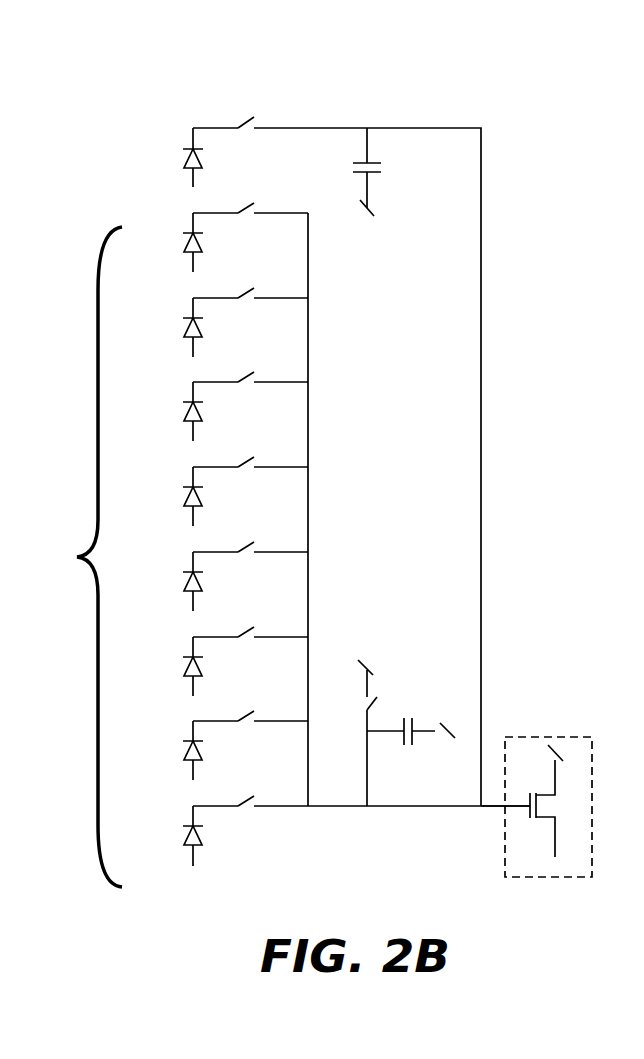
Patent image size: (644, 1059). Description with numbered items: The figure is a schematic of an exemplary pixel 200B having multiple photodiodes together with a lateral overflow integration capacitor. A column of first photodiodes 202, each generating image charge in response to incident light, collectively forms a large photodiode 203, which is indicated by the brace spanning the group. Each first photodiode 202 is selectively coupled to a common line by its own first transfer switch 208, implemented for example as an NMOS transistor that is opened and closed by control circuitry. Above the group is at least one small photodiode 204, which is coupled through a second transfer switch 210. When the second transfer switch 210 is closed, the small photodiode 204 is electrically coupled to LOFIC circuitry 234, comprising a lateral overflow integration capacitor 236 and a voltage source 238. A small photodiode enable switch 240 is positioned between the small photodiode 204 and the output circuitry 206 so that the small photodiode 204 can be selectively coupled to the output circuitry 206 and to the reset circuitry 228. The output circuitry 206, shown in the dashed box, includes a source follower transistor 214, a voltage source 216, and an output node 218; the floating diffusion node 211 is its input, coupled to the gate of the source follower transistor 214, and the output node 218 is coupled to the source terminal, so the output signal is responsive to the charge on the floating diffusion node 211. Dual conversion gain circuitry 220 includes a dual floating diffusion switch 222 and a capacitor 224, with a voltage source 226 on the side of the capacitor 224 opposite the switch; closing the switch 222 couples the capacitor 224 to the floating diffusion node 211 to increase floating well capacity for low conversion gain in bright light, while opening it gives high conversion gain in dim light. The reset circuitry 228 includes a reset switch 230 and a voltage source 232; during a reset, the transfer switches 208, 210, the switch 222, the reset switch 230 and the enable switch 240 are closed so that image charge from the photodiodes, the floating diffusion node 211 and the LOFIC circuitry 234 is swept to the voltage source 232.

The pixel 200B is at (520, 105).
The first photodiode 202 is at (193, 262).
The large photodiode 203 is at (81, 557).
The small photodiode 204 is at (193, 175).
The output circuitry 206 is at (537, 771).
The first transfer switch 208 is at (245, 205).
The second transfer switch 210 is at (245, 120).
The floating diffusion node 211 is at (518, 810).
The source follower transistor 214 is at (535, 790).
The voltage source 216 is at (556, 748).
The output node 218 is at (557, 843).
The dual conversion gain circuitry 220 is at (420, 716).
The dual floating diffusion switch 222 is at (370, 757).
The capacitor 224 is at (404, 715).
The voltage source 226 is at (438, 735).
The reset circuitry 228 is at (358, 678).
The reset switch 230 is at (368, 705).
The voltage source 232 is at (372, 675).
The LOFIC circuitry 234 is at (390, 178).
The lateral overflow integration capacitor 236 is at (381, 162).
The voltage source 238 is at (362, 210).
The small photodiode enable switch 240 is at (484, 458).